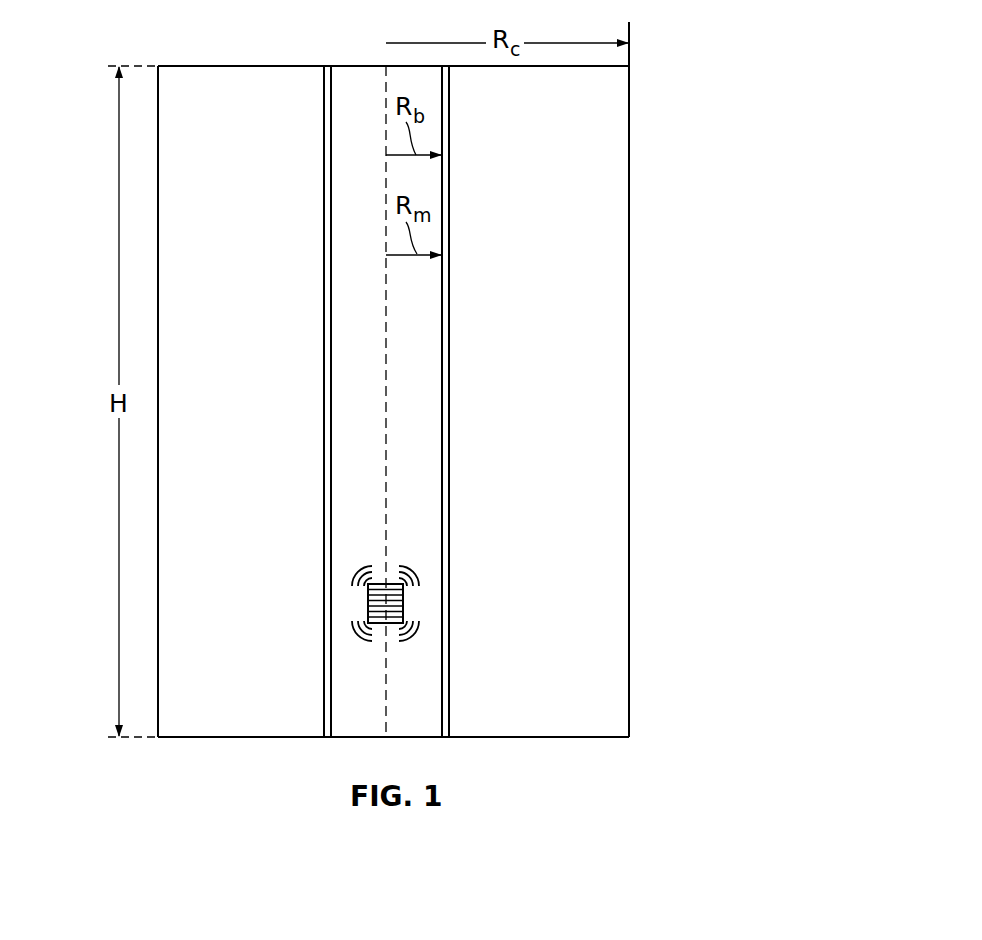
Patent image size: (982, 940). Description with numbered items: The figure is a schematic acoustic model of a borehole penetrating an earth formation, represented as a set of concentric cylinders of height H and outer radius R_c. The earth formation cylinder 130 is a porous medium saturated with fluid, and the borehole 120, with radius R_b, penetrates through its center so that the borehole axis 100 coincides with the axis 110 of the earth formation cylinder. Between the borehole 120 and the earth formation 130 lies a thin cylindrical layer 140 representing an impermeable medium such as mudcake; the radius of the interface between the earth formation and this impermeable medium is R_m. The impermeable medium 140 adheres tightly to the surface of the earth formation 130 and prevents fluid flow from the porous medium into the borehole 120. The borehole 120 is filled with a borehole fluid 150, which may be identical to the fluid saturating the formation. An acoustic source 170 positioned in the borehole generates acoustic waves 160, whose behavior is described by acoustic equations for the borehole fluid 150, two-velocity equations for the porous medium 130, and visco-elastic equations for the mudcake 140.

The borehole axis 100 is at (400, 80).
The axis of the earth formation cylinder 110 is at (386, 352).
The borehole 120 is at (420, 389).
The earth formation cylinder 130 is at (188, 216).
The thin cylindrical layer 140 is at (331, 500).
The borehole fluid 150 is at (400, 458).
The acoustic waves 160 is at (415, 575).
The acoustic source 170 is at (403, 612).